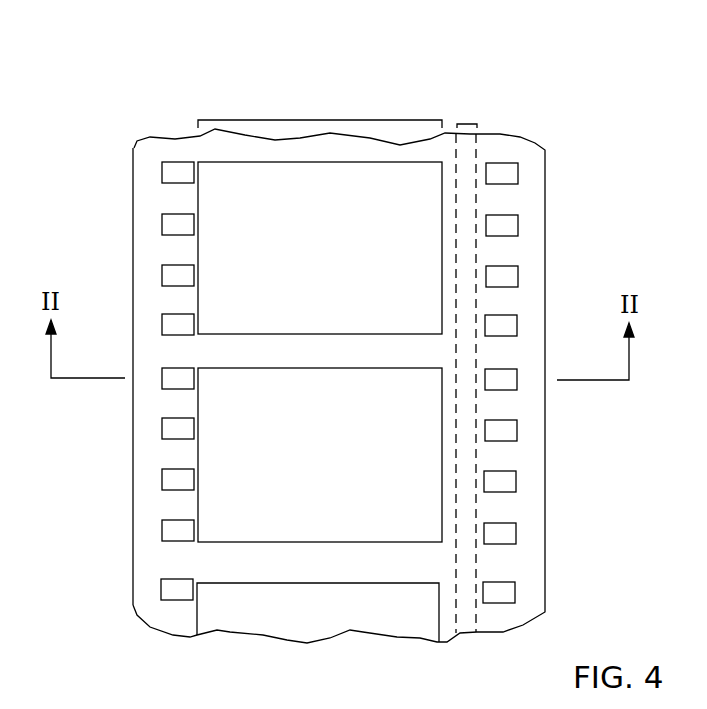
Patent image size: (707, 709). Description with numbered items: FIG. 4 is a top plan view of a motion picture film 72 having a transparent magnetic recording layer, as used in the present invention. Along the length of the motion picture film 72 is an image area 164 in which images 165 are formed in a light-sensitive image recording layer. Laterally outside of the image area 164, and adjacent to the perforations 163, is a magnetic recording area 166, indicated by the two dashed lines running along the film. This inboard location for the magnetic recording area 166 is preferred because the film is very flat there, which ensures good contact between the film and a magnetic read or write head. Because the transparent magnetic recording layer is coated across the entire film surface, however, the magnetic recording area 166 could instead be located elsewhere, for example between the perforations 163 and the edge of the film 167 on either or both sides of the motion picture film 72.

The motion picture film 72 is at (580, 177).
The perforations 163 is at (510, 482).
The image area 164 is at (320, 120).
The images 165 is at (352, 256).
The magnetic recording area 166 is at (467, 123).
The edge of the film 167 is at (133, 533).